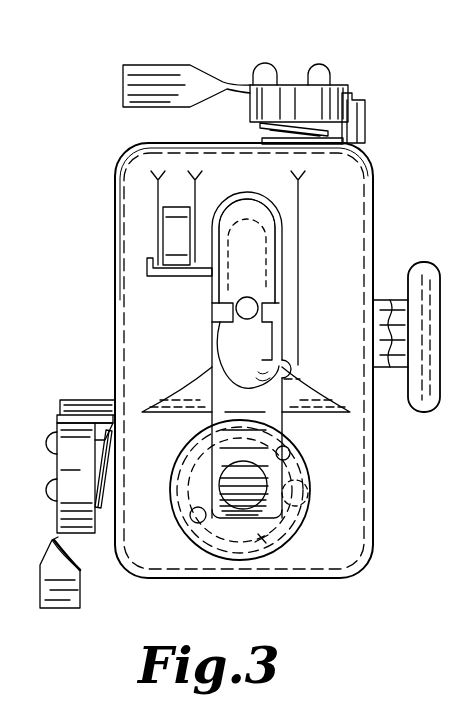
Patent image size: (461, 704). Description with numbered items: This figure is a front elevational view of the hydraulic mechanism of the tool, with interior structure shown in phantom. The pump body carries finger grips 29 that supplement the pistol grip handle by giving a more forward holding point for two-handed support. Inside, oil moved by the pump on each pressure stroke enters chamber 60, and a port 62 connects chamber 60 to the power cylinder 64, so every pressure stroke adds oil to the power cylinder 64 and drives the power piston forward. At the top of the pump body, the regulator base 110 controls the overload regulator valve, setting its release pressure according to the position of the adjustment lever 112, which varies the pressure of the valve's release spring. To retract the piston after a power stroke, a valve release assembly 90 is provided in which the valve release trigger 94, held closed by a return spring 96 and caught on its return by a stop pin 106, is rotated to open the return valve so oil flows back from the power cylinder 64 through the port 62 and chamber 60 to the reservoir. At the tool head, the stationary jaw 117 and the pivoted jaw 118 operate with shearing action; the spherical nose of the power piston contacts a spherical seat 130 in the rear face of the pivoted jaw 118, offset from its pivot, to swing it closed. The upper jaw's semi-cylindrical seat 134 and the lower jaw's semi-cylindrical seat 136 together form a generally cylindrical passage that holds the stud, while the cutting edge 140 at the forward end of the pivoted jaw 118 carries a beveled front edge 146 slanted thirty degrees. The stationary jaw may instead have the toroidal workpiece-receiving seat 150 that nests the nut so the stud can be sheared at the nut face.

The finger grips 29 is at (418, 263).
The chamber 60 is at (458, 450).
The port 62 is at (303, 507).
The power cylinder 64 is at (225, 552).
The valve release assembly 90 is at (42, 476).
The valve release trigger 94 is at (58, 597).
The return spring 96 is at (102, 478).
The stop pin 106 is at (90, 403).
The regulator base 110 is at (293, 92).
The adjustment lever 112 is at (170, 63).
The stationary jaw 117 is at (253, 247).
The pivoted jaw 118 is at (238, 381).
The spherical seat 130 is at (272, 552).
The semi-cylindrical seat 134 is at (232, 305).
The semi-cylindrical seat 136 is at (243, 323).
The cutting edge 140 is at (270, 338).
The beveled front edge 146 is at (285, 368).
The workpiece-receiving seat 150 is at (253, 303).